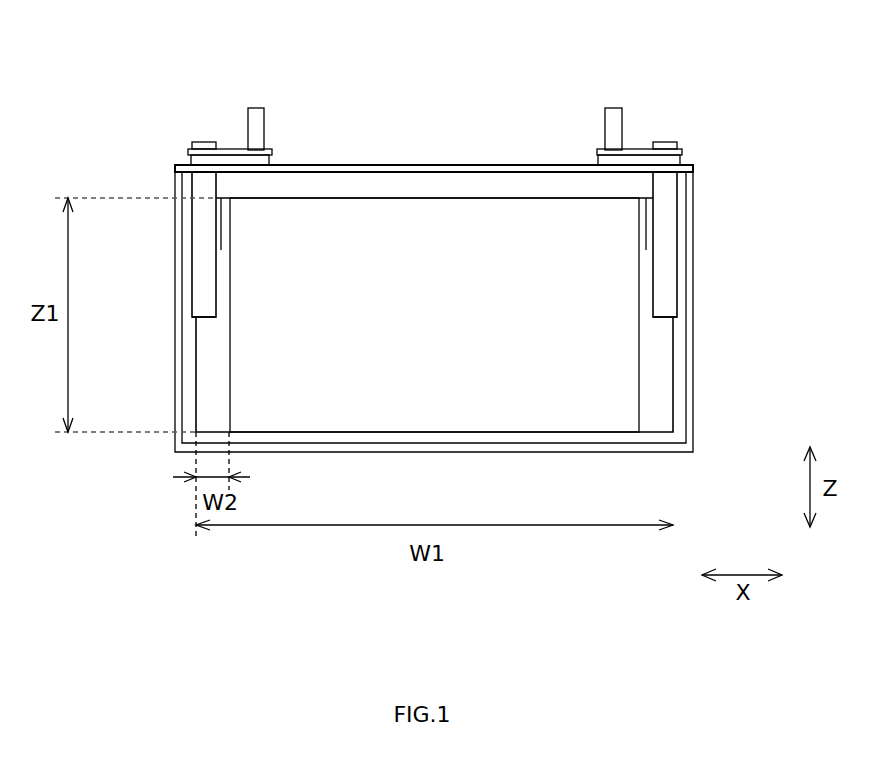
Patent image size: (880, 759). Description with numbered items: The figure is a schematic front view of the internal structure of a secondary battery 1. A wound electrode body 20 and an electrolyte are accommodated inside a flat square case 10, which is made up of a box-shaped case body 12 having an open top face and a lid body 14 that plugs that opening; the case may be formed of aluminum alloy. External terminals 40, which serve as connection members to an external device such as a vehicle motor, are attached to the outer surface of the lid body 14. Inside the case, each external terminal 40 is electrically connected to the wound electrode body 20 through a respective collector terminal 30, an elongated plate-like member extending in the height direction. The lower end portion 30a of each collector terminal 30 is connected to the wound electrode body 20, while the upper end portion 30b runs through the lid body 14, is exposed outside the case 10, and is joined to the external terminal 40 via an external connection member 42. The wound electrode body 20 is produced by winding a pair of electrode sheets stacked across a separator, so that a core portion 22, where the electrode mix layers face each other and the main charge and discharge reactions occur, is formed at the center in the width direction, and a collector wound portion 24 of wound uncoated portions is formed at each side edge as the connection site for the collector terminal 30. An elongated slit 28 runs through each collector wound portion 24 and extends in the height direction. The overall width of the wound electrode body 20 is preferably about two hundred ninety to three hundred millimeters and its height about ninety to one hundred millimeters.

The secondary battery 1 is at (148, 44).
The case 10 is at (770, 157).
The case body 12 is at (693, 198).
The lid body 14 is at (695, 168).
The wound electrode body 20 is at (427, 398).
The core portion 22 is at (442, 197).
The collector wound portion 24 is at (203, 387).
The slit 28 is at (220, 230).
The collector terminal 30 is at (197, 280).
The lower end portion 30a is at (203, 310).
The upper end portion 30b is at (202, 141).
The external terminal 40 is at (262, 118).
The external connection member 42 is at (227, 150).